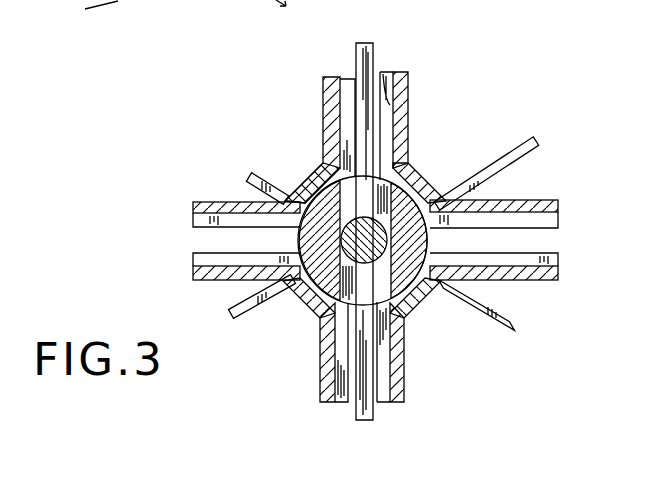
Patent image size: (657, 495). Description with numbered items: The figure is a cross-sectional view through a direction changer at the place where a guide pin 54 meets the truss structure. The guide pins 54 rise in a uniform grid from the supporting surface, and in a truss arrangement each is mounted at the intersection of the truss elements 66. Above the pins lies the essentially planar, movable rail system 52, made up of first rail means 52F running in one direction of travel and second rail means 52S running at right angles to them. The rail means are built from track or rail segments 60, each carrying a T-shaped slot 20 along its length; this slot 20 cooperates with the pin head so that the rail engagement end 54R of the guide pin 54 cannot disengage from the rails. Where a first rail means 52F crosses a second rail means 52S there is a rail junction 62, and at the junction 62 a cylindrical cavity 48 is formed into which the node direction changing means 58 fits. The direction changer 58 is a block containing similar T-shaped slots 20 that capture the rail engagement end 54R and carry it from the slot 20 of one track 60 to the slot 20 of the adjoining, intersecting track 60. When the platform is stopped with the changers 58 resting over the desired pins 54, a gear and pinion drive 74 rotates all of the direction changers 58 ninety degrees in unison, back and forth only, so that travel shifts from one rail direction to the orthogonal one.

The T-shaped slot 20 is at (390, 72).
The cylindrical cavity 48 is at (443, 281).
The rail system 52 is at (232, 283).
The first rail means 52F is at (323, 88).
The second rail means 52S is at (240, 198).
The guide pin 54 is at (413, 224).
The rail engagement end 54R is at (302, 303).
The node direction changing means 58 is at (452, 212).
The rail segment 60 is at (403, 92).
The rail junction 62 is at (305, 165).
The truss element 66 is at (369, 45).
The gear and pinion drive 74 is at (404, 313).